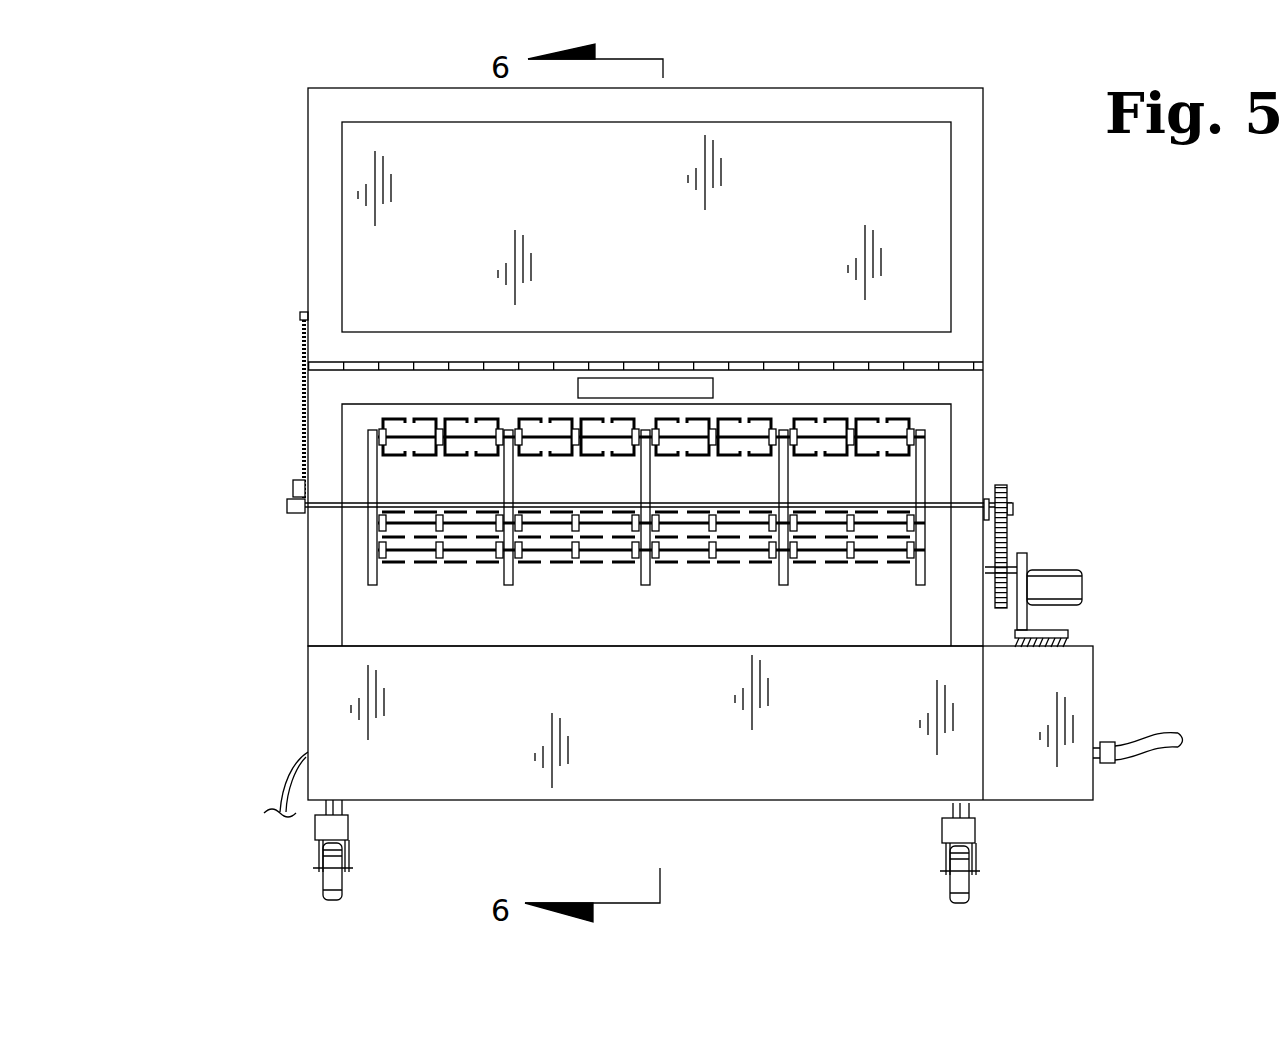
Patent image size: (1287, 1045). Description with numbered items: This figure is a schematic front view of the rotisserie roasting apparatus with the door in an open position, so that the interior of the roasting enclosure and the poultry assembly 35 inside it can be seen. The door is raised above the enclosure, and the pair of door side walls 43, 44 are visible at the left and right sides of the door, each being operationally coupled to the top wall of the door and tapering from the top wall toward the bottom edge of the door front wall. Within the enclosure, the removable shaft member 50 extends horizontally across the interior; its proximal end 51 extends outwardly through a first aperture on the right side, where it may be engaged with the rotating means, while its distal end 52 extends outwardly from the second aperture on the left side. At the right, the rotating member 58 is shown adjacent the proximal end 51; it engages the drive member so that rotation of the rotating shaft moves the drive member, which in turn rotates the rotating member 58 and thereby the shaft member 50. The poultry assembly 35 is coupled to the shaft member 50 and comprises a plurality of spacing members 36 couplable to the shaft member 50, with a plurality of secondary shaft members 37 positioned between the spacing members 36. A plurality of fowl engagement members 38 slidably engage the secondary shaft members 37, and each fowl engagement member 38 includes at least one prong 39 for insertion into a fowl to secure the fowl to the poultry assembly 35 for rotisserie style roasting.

The door side wall 43 is at (279, 237).
The door side wall 44 is at (1007, 229).
The shaft member 50 is at (718, 505).
The poultry assembly 35 is at (922, 478).
The proximal end 51 is at (940, 503).
The rotating member 58 is at (1005, 493).
The fowl engagement member 38 is at (462, 432).
The distal end 52 is at (405, 503).
The secondary shaft member 37 is at (410, 522).
The spacing member 36 is at (410, 548).
The prong 39 is at (439, 588).